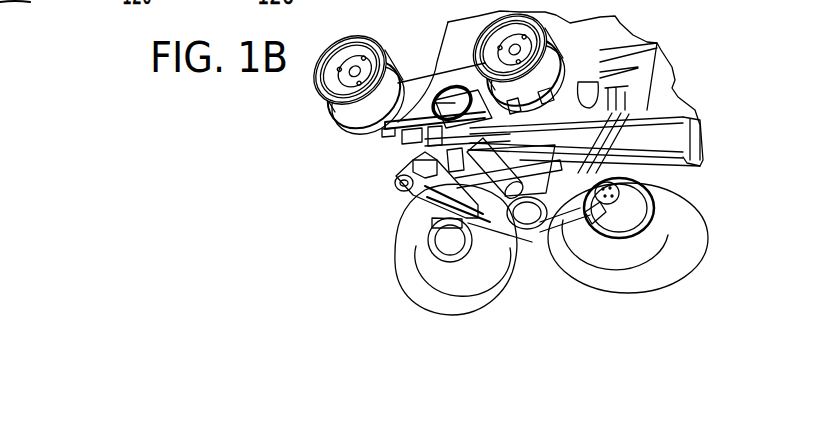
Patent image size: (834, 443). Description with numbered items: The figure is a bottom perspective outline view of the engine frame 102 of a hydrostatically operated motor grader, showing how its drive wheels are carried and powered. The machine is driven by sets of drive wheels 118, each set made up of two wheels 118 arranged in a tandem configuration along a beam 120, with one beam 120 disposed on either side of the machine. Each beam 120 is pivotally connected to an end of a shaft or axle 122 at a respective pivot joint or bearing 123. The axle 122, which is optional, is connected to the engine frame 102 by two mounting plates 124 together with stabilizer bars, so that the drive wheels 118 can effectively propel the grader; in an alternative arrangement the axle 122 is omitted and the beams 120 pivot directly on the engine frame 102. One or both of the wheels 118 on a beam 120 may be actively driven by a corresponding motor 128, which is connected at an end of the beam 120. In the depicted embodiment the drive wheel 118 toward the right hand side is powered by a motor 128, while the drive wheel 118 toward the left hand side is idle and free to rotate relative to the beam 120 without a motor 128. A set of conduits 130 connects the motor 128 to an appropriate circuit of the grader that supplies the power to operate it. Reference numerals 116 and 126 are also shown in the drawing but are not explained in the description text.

The engine frame 102 is at (396, 179).
The deck plate 116 is at (453, 47).
The drive wheel 118 is at (423, 297).
The beam 120 is at (425, 97).
The axle 122 is at (405, 198).
The pivot joint or bearing 123 is at (403, 156).
The mounting plate 124 is at (510, 197).
The hub 126 is at (550, 228).
The motor 128 is at (612, 187).
The set of conduits 130 is at (590, 163).